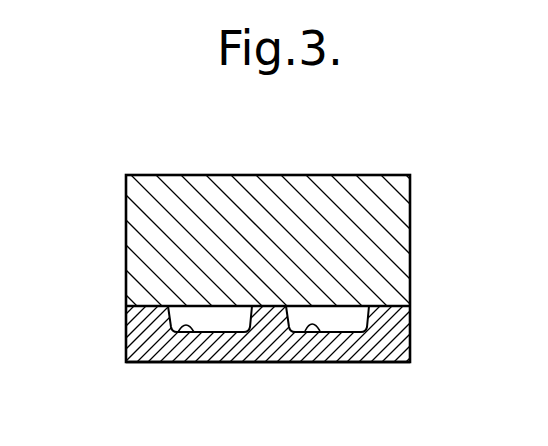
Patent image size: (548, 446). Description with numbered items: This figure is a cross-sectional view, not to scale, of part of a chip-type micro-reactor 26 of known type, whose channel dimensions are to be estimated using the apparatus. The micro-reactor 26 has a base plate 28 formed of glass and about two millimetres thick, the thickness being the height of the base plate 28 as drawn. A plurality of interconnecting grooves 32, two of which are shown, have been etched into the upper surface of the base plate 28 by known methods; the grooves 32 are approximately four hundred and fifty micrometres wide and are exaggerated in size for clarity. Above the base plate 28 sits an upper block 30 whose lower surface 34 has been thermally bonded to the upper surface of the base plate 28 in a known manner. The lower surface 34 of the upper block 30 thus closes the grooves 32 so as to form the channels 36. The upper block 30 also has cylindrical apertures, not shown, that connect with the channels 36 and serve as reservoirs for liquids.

The micro-reactor 26 is at (437, 217).
The base plate 28 is at (393, 332).
The upper block 30 is at (192, 200).
The grooves 32 is at (170, 328).
The lower surface 34 is at (138, 313).
The channels 36 is at (221, 322).